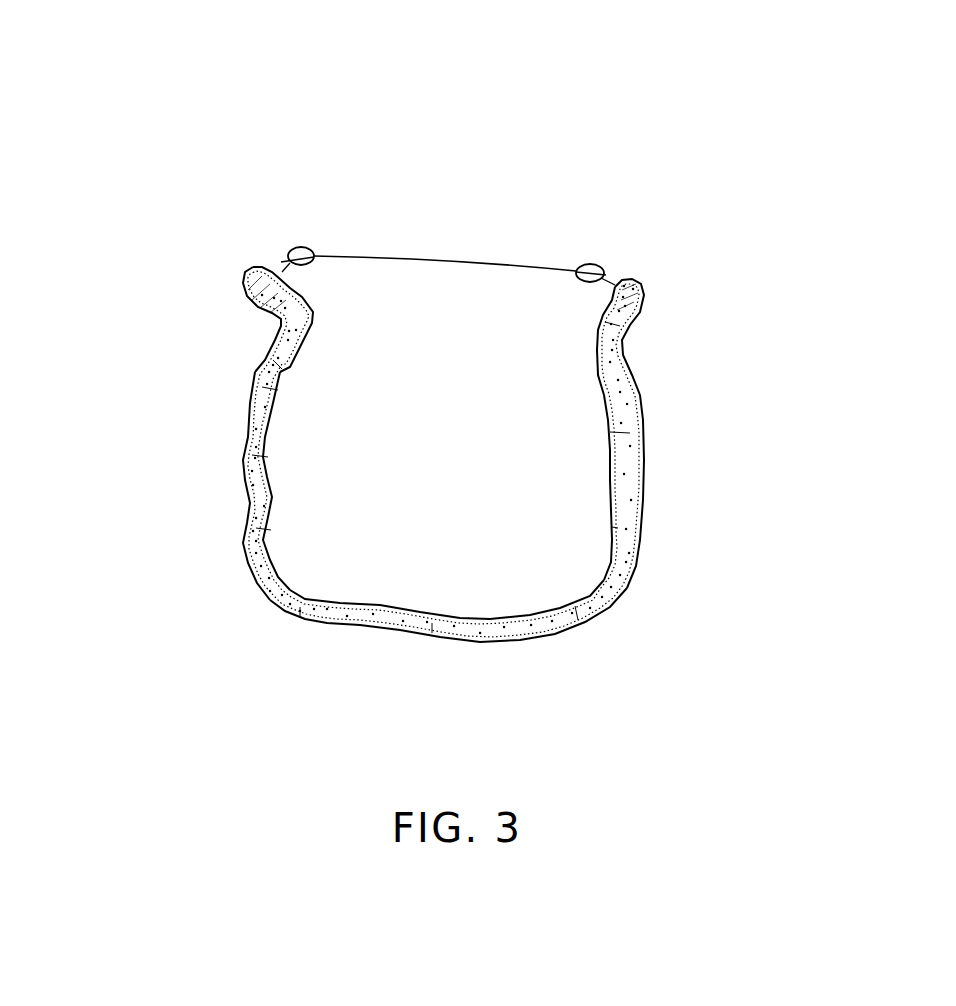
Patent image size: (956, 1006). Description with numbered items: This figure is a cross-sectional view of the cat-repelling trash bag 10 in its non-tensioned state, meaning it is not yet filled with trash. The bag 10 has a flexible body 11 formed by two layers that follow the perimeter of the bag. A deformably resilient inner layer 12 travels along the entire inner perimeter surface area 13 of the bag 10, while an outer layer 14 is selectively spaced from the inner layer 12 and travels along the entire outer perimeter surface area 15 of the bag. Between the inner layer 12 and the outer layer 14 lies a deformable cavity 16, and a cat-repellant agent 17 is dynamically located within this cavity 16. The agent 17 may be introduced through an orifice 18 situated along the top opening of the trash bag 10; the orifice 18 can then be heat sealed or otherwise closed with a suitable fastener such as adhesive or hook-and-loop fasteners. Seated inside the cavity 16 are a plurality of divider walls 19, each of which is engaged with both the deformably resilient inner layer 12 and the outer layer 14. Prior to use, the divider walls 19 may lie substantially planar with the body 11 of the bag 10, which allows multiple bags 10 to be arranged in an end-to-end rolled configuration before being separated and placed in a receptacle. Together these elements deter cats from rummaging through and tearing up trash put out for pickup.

The cat-repelling trash bag 10 is at (439, 393).
The flexible body 11 is at (464, 200).
The deformably resilient inner layer 12 is at (632, 410).
The inner perimeter surface area 13 is at (298, 429).
The outer layer 14 is at (630, 373).
The outer perimeter surface area 15 is at (338, 640).
The deformable cavity 16 is at (273, 360).
The cat-repellant agent 17 is at (256, 528).
The orifice 18 is at (298, 247).
The divider walls 19 is at (263, 275).